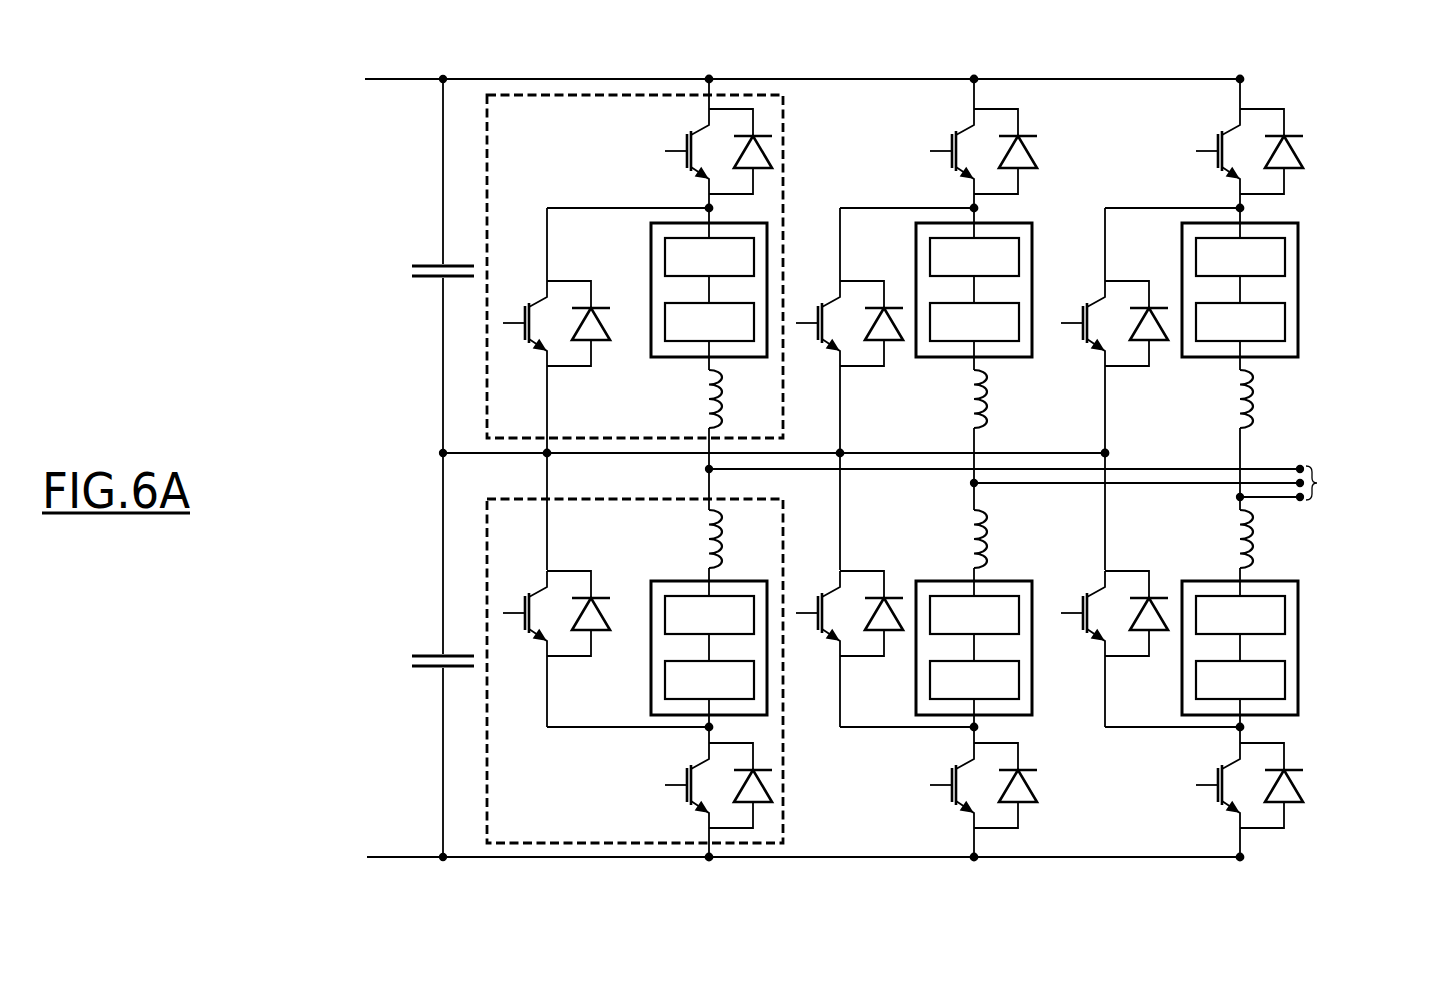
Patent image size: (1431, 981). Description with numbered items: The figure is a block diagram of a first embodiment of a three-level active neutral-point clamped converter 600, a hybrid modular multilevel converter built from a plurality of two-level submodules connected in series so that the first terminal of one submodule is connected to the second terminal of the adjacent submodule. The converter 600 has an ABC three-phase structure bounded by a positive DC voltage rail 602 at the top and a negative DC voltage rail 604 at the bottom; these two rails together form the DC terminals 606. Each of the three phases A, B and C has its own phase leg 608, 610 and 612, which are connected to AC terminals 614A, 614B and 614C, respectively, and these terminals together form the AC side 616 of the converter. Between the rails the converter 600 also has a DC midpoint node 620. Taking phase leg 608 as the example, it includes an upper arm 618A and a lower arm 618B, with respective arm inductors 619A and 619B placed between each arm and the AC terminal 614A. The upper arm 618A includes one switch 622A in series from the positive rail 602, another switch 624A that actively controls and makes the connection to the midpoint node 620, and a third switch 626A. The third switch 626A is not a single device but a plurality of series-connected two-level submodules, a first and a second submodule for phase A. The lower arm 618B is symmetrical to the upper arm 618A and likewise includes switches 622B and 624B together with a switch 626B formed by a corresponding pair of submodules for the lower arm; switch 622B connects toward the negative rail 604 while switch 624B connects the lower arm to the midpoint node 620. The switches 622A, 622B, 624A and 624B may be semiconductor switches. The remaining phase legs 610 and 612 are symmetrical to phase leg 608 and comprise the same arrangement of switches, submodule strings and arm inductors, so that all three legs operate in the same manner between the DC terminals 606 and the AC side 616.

The 3-level active neutral-point clamped (ANPC) converter 600 is at (875, 43).
The positive DC voltage rail 602 is at (365, 80).
The negative DC voltage rail 604 is at (367, 856).
The DC terminals 606 is at (357, 468).
The phase leg 608 is at (820, 507).
The phase leg 610 is at (1044, 507).
The phase leg 612 is at (1182, 507).
The AC terminal 614A is at (707, 470).
The AC terminal 614B is at (971, 484).
The AC terminal 614C is at (1237, 498).
The AC side 616 is at (1351, 483).
The upper arm 618A is at (783, 107).
The lower arm 618B is at (783, 828).
The arm inductor 619A is at (707, 403).
The arm inductor 619B is at (707, 533).
The DC midpoint node 620 is at (440, 453).
The switch 622A is at (783, 141).
The switch 622B is at (783, 795).
The switch 624A is at (500, 313).
The switch 624B is at (500, 599).
The third switch 626A is at (651, 247).
The switch 626B is at (651, 688).